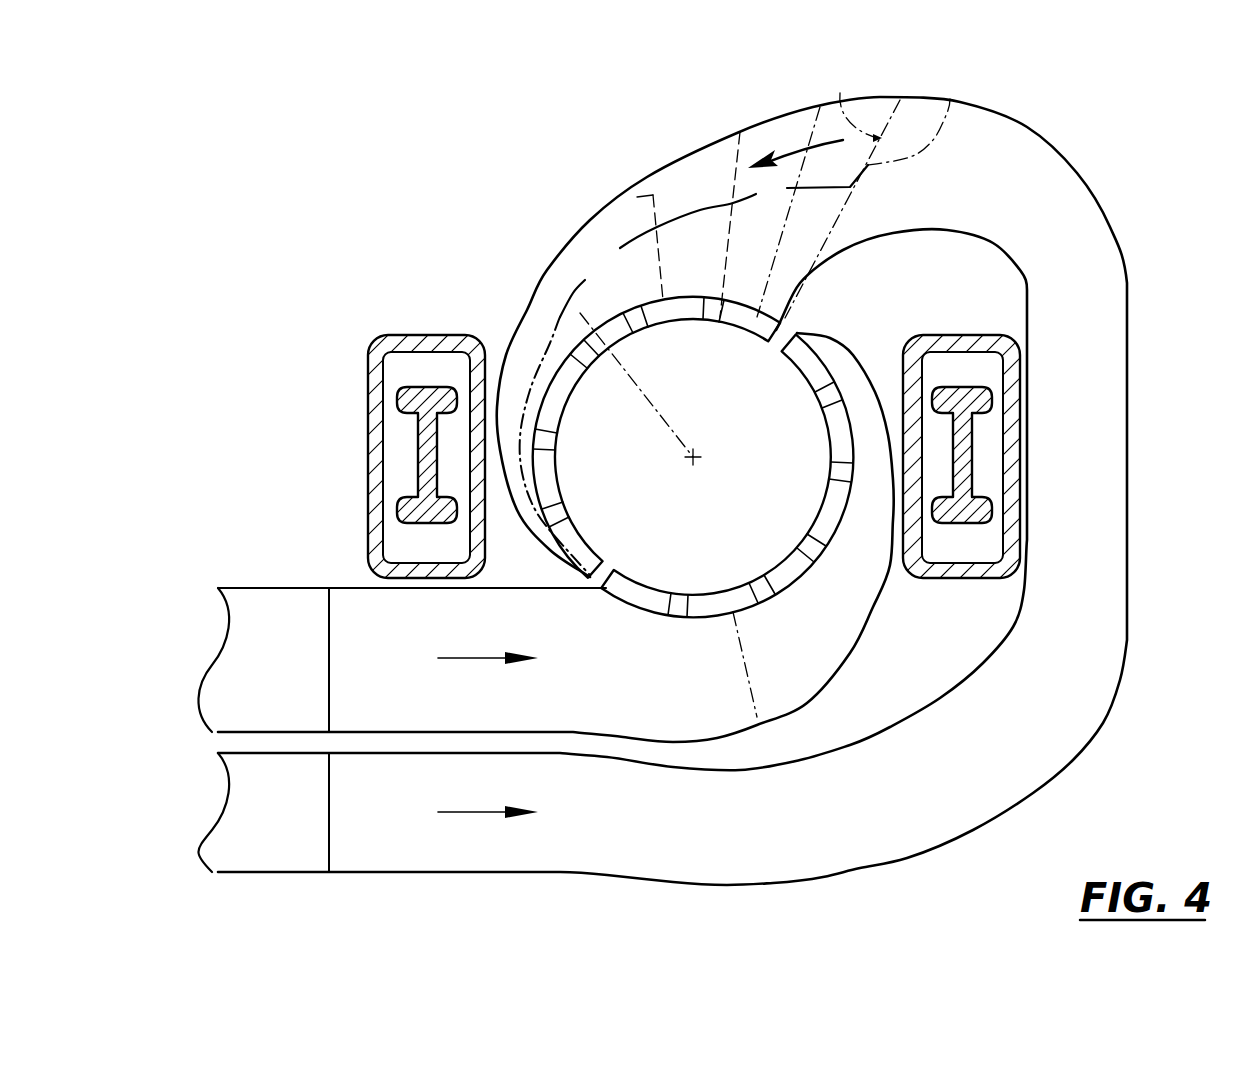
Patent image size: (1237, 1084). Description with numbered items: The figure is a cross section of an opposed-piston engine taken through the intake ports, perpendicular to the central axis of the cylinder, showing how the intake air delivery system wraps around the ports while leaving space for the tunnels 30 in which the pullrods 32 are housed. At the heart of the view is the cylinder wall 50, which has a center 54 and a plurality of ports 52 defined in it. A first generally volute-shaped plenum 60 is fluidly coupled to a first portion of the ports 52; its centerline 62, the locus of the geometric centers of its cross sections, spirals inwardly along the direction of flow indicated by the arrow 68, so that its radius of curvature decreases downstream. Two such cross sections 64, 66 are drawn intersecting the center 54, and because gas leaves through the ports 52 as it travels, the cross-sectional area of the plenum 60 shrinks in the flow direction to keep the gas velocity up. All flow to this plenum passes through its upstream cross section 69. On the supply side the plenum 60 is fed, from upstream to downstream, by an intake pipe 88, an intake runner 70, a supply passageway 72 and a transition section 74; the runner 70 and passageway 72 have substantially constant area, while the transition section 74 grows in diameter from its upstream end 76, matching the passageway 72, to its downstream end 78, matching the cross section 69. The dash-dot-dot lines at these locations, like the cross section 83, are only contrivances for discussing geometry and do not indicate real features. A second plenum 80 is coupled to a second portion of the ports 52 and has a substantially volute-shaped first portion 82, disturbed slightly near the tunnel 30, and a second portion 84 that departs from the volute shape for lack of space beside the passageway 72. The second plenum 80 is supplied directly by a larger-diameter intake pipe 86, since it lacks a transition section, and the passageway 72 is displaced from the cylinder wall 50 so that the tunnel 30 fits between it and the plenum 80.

The tunnel 30 is at (368, 432).
The pullrod 32 is at (430, 387).
The cylinder wall 50 is at (602, 363).
The ports 52 is at (735, 313).
The center 54 is at (697, 458).
The first generally volute-shaped plenum 60 is at (508, 338).
The centerline 62 is at (603, 263).
The cross section 64 is at (565, 293).
The cross section 66 is at (623, 192).
The arrow 68 is at (793, 152).
The upstream cross section 69 is at (840, 93).
The intake runner 70 is at (471, 873).
The supply passageway 72 is at (1033, 792).
The transition section 74 is at (973, 160).
The upstream end 76 is at (1013, 250).
The downstream end 78 is at (951, 100).
The second plenum 80 is at (858, 656).
The first portion 82 is at (861, 593).
The cross section 83 is at (748, 683).
The second portion 84 is at (716, 695).
The intake pipe 86 is at (265, 588).
The intake pipe 88 is at (273, 873).